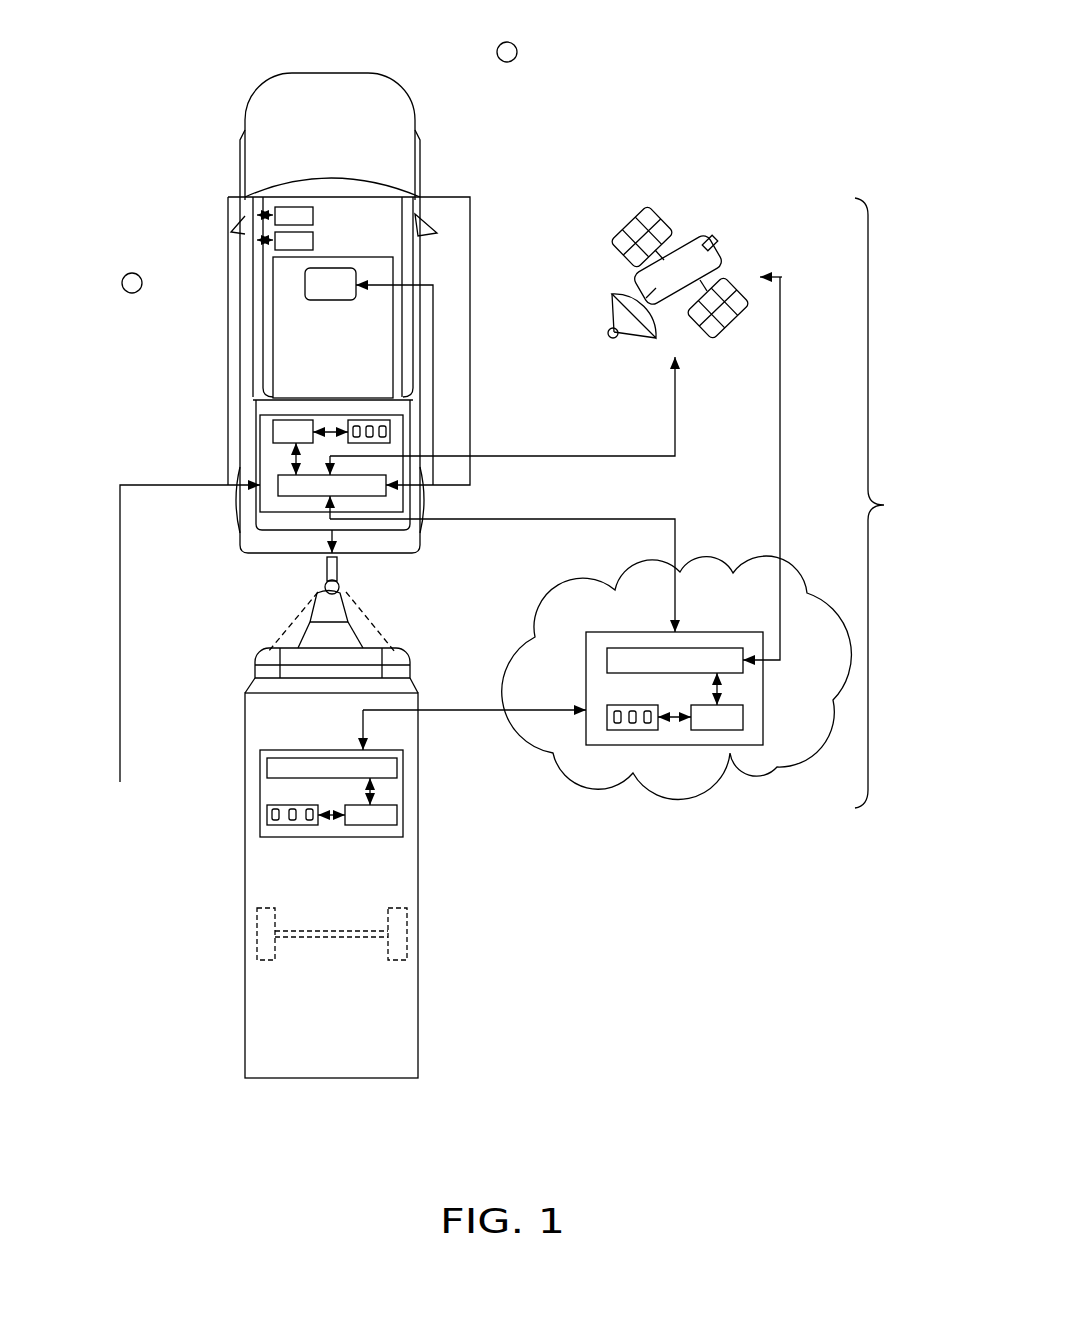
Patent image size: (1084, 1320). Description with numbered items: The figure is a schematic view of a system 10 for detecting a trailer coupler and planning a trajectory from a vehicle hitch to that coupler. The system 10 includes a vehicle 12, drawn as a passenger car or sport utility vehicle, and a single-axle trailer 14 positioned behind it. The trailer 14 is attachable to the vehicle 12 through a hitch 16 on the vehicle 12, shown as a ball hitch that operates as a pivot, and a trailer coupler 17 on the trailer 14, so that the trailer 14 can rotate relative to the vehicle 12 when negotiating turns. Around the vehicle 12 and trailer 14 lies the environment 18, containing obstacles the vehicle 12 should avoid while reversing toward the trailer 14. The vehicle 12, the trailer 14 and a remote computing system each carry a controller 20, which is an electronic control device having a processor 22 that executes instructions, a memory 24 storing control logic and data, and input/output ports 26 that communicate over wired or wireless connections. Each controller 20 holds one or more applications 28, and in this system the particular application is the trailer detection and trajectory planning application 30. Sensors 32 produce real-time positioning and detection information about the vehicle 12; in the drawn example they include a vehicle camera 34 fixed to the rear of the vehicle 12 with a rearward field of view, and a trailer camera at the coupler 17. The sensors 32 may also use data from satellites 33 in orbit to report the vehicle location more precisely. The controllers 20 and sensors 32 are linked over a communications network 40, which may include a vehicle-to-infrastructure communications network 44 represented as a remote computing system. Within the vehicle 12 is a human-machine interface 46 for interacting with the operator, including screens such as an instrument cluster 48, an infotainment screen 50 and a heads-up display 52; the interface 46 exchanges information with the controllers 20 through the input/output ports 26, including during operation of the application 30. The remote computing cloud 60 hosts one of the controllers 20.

The system 10 is at (110, 52).
The vehicle 12 is at (402, 84).
The trailer 14 is at (418, 975).
The hitch 16 is at (322, 580).
The trailer coupler 17 is at (322, 583).
The environment 18 is at (517, 47).
The controller 20 is at (273, 432).
The processor 22 is at (260, 438).
The memory 24 is at (390, 438).
The input/output ports 26 is at (260, 497).
The application 28 is at (405, 659).
The trailer detection and trajectory planning application 30 is at (368, 420).
The sensors 32 is at (277, 423).
The satellites 33 is at (690, 240).
The vehicle camera 34 is at (223, 230).
The communications network 40 is at (909, 503).
The vehicle-to-infrastructure communications network 44 is at (909, 503).
The human-machine interface 46 is at (428, 150).
The instrument cluster 48 is at (313, 240).
The infotainment screen 50 is at (356, 275).
The heads-up display 52 is at (298, 207).
The cloud 60 is at (673, 803).